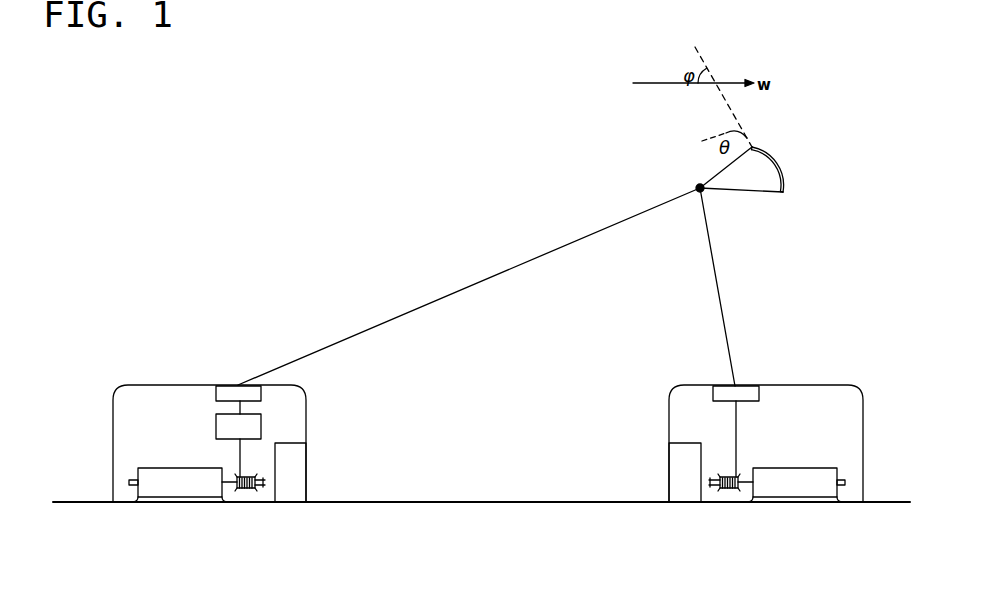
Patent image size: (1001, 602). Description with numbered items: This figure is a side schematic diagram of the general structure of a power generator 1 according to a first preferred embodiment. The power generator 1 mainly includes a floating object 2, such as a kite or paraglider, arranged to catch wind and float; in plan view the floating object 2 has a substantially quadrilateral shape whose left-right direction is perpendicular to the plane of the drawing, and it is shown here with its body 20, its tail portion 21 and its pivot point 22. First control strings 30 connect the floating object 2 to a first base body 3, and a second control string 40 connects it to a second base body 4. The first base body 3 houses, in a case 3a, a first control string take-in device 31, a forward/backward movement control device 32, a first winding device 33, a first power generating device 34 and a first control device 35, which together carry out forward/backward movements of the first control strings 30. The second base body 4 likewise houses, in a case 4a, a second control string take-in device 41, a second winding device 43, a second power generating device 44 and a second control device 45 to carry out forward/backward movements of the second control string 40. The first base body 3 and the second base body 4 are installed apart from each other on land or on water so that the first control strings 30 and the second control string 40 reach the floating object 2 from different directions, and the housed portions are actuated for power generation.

The power generator 1 is at (412, 170).
The floating object 2 is at (746, 184).
The vane body 20 is at (753, 193).
The vane tail plate 21 is at (770, 157).
The pivot shaft 22 is at (697, 186).
The first base body 3 is at (199, 429).
The case 3a is at (113, 444).
The first control strings 30 is at (607, 228).
The first control string take-in device 31 is at (236, 392).
The forward/backward movement control device 32 is at (257, 427).
The first winding device 33 is at (243, 488).
The first power generating device 34 is at (175, 482).
The first control device 35 is at (291, 495).
The second base body 4 is at (792, 434).
The case 4a is at (863, 445).
The second control string 40 is at (718, 278).
The second control string take-in device 41 is at (747, 390).
The second winding device 43 is at (728, 490).
The second power generating device 44 is at (800, 488).
The second control device 45 is at (690, 490).